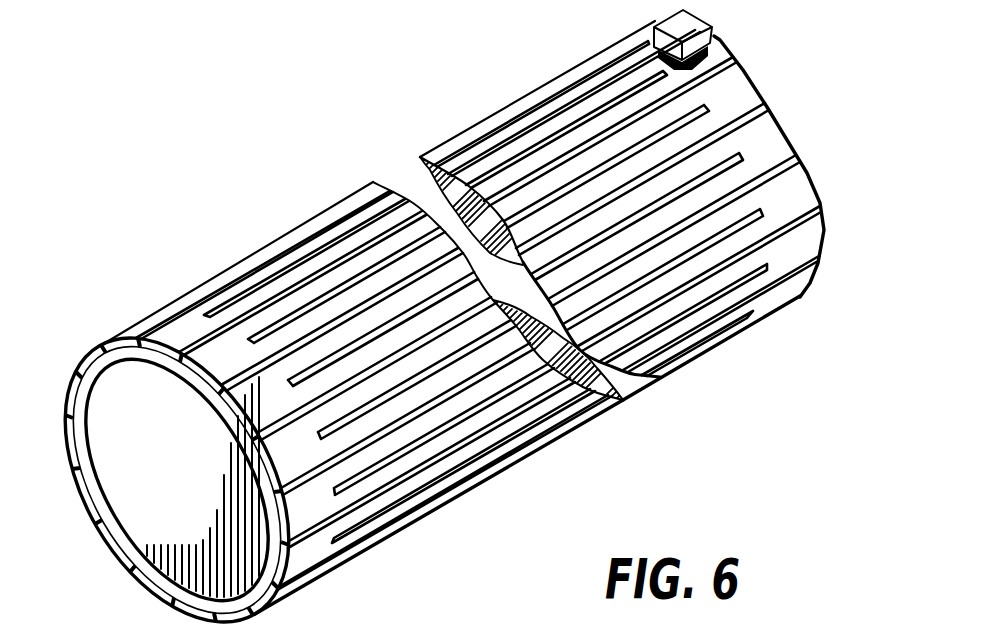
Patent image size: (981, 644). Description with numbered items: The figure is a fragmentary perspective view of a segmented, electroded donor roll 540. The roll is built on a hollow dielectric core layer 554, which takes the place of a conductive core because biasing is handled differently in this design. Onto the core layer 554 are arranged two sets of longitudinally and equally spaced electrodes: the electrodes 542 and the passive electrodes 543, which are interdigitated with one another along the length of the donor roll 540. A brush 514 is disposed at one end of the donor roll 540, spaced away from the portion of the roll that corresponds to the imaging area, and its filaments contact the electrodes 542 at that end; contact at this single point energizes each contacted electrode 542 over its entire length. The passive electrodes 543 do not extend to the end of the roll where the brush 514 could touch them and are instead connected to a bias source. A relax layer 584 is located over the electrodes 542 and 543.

The donor roll 540 is at (263, 126).
The brush 514 is at (707, 62).
The electrodes 542 is at (783, 237).
The passive electrodes 543 is at (197, 340).
The relax layer 584 is at (83, 367).
The hollow dielectric core layer 554 is at (72, 460).